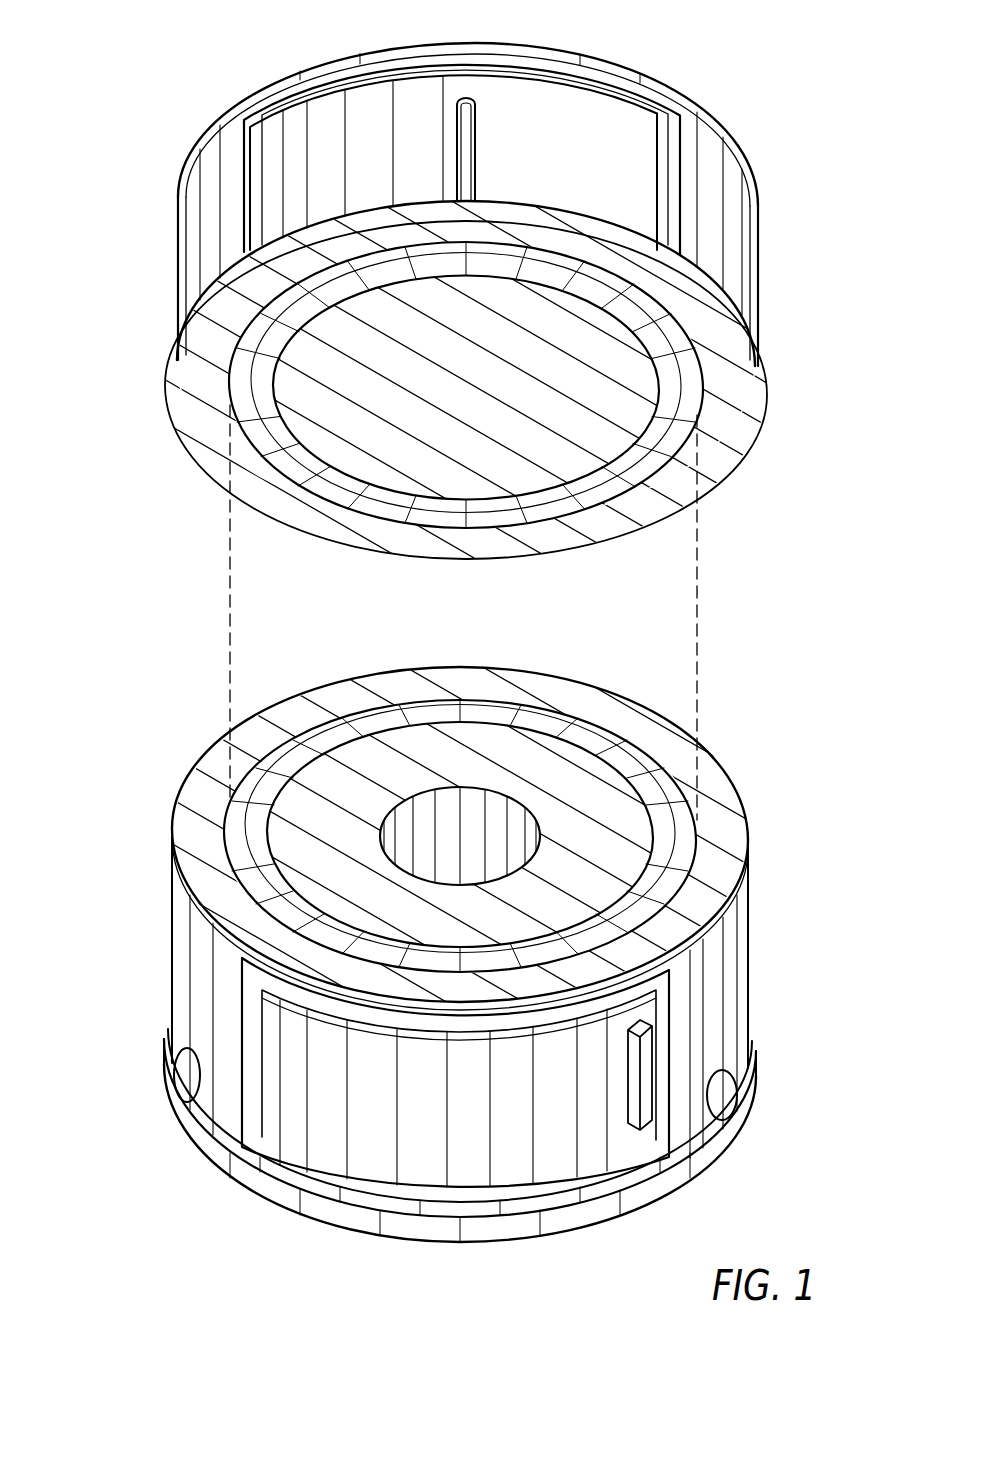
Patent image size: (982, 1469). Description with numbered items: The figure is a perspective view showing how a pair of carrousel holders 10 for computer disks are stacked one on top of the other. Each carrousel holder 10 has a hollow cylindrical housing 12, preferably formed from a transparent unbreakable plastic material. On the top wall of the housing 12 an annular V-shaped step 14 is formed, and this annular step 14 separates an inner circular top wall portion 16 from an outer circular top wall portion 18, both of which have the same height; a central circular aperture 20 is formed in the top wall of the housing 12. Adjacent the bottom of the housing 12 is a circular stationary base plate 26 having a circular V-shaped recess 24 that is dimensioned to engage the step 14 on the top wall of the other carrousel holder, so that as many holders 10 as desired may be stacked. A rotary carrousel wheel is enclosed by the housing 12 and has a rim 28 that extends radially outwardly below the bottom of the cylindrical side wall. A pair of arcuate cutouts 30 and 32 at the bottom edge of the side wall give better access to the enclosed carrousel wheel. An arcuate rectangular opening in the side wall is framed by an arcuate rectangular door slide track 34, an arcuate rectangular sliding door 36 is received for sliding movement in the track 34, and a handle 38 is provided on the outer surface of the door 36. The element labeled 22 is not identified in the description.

The carrousel holder 10 is at (168, 660).
The hollow cylindrical housing 12 is at (172, 878).
The annular V-shaped step 14 is at (240, 817).
The inner circular top wall portion 16 is at (633, 870).
The outer circular top wall portion 18 is at (732, 825).
The central circular aperture 20 is at (423, 812).
The cap member 22 is at (707, 480).
The circular V-shaped recess 24 is at (517, 517).
The circular stationary base plate 26 is at (363, 427).
The rim 28 is at (760, 345).
The arcuate cutout 30 is at (710, 1120).
The arcuate cutout 32 is at (195, 1100).
The arcuate rectangular door slide track 34 is at (647, 97).
The arcuate rectangular sliding door 36 is at (407, 85).
The handle 38 is at (466, 141).